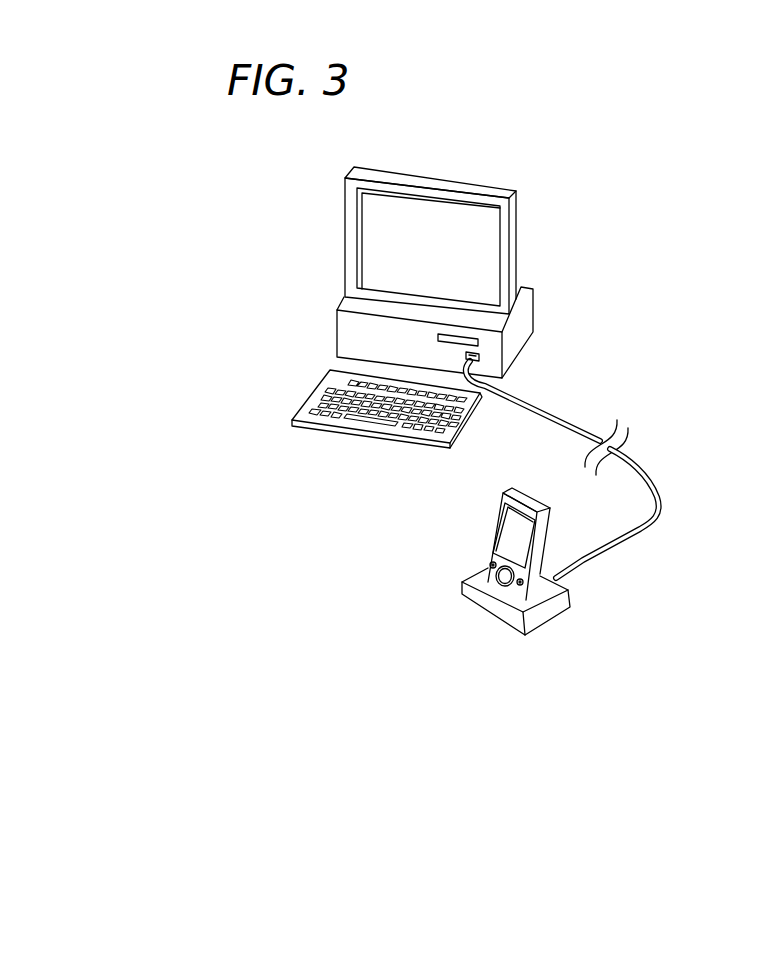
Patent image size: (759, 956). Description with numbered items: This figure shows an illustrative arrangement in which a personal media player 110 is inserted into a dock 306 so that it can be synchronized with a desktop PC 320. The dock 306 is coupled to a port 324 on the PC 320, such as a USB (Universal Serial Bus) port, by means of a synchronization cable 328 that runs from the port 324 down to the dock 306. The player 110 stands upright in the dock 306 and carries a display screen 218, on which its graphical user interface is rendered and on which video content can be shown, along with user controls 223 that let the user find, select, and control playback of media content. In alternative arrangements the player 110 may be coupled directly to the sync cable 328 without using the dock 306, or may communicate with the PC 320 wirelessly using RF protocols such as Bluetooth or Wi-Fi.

The desktop PC 320 is at (533, 289).
The port 324 is at (482, 360).
The synchronization cable 328 is at (658, 500).
The personal media player 110 is at (473, 530).
The display screen 218 is at (512, 535).
The user controls 223 is at (464, 560).
The dock 306 is at (565, 588).